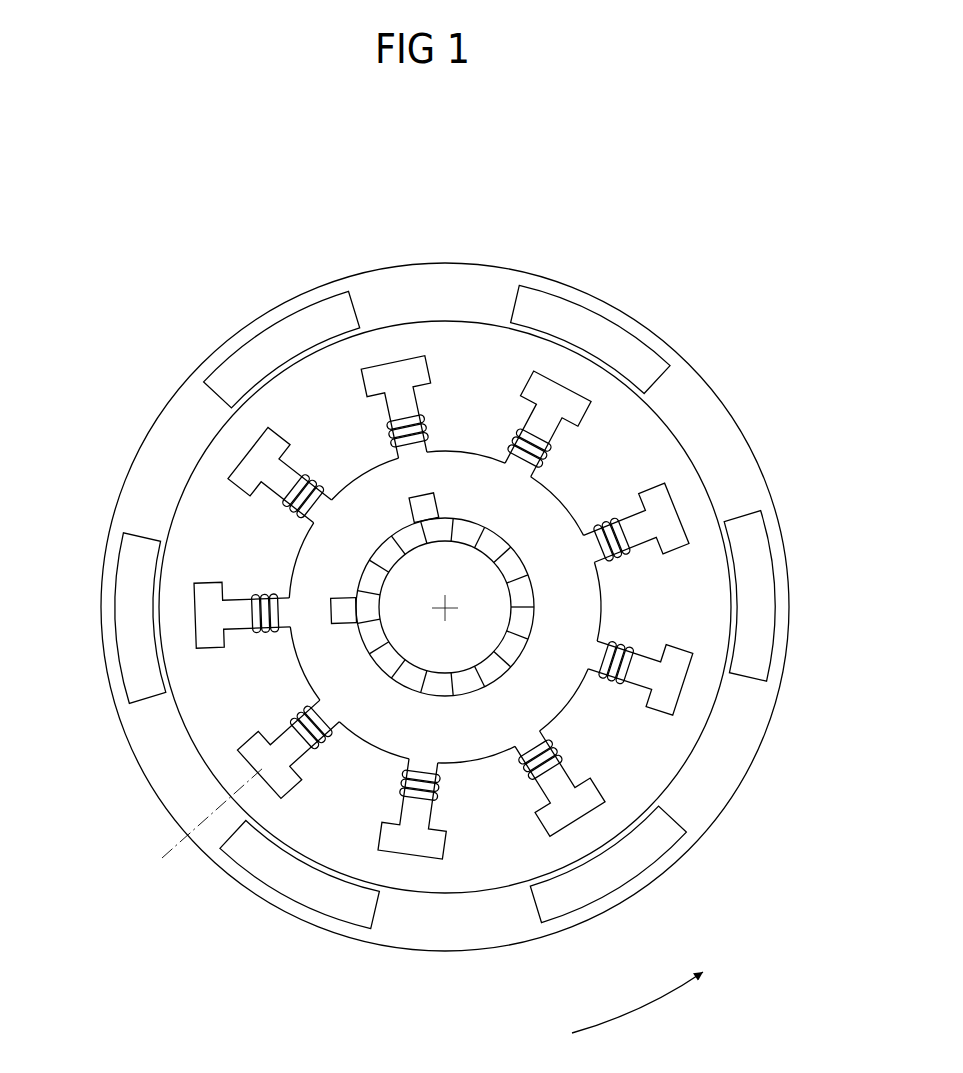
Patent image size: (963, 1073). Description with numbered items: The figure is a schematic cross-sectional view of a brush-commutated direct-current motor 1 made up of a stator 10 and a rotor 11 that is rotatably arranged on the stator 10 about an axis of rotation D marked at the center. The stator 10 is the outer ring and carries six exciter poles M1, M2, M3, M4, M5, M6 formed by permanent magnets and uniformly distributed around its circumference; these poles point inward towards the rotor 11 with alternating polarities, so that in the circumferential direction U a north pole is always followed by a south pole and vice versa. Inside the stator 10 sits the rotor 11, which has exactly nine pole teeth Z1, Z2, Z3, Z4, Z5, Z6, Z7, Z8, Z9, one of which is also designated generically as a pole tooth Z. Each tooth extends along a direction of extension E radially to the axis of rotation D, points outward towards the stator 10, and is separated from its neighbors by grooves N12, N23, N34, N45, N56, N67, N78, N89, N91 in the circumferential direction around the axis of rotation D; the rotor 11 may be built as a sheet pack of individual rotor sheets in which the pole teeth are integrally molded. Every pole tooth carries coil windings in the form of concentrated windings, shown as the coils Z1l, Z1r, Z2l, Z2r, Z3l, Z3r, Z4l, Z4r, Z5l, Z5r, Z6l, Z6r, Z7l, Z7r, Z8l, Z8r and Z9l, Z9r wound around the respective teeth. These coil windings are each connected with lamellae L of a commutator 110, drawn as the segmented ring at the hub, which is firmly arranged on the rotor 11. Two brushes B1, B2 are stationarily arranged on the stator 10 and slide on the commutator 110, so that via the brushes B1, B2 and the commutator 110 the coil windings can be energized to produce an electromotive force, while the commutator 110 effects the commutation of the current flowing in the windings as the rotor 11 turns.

The brush-commutated direct-current motor 1 is at (469, 577).
The stator 10 is at (760, 467).
The rotor 11 is at (567, 497).
The commutator 110 is at (397, 700).
The exciter pole M1 is at (232, 358).
The exciter pole M2 is at (630, 337).
The exciter pole M3 is at (773, 628).
The exciter pole M4 is at (657, 858).
The exciter pole M5 is at (352, 922).
The exciter pole M6 is at (118, 653).
The pole tooth Z is at (460, 281).
The pole tooth Z1 is at (285, 482).
The pole tooth Z2 is at (420, 328).
The pole tooth Z3 is at (540, 428).
The pole tooth Z4 is at (633, 531).
The pole tooth Z5 is at (638, 669).
The pole tooth Z6 is at (552, 778).
The pole tooth Z7 is at (417, 808).
The pole tooth Z8 is at (294, 743).
The pole tooth Z9 is at (242, 614).
The coil winding Z1l is at (323, 469).
The coil winding Z1r is at (298, 483).
The coil winding Z2l is at (449, 416).
The coil winding Z2r is at (422, 432).
The coil winding Z3l is at (584, 443).
The coil winding Z3r is at (550, 448).
The coil winding Z4l is at (652, 555).
The coil winding Z4r is at (652, 555).
The coil winding Z5l is at (631, 691).
The coil winding Z5r is at (617, 683).
The coil winding Z6l is at (510, 784).
The coil winding Z6r is at (530, 780).
The coil winding Z7l is at (377, 799).
The coil winding Z7r is at (398, 780).
The coil winding Z8l is at (265, 719).
The coil winding Z8r is at (293, 722).
The coil winding Z9l is at (240, 585).
The coil winding Z9r is at (255, 595).
The groove N12 is at (322, 402).
The groove N23 is at (477, 370).
The groove N34 is at (620, 483).
The groove N45 is at (680, 606).
The groove N56 is at (635, 752).
The groove N67 is at (483, 848).
The groove N78 is at (302, 802).
The groove N89 is at (222, 728).
The groove N91 is at (218, 520).
The brush B1 is at (343, 595).
The brush B2 is at (440, 502).
The axis of rotation D is at (445, 608).
The lamellae L is at (343, 643).
The direction of extension E is at (178, 840).
The circumferential direction U is at (637, 1006).